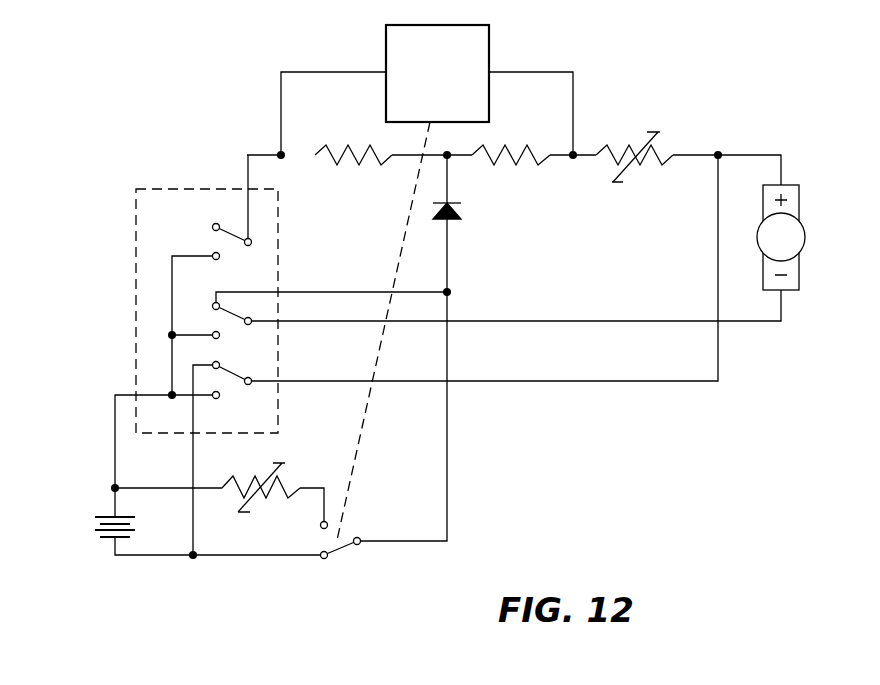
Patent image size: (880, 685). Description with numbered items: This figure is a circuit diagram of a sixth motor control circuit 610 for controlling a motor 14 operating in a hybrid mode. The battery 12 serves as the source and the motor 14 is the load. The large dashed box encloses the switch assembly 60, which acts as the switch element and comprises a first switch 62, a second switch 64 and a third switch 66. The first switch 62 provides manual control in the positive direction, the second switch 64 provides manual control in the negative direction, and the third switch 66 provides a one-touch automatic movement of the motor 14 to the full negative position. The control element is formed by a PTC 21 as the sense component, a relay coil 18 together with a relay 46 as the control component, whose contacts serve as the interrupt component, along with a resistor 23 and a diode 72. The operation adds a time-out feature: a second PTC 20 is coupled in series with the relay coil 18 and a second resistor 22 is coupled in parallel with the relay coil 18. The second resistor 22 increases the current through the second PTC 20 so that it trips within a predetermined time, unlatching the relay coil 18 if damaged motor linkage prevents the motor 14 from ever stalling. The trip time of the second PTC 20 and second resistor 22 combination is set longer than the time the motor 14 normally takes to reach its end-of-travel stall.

The sixth motor control circuit 610 is at (148, 101).
The relay coil 18 is at (452, 110).
The resistor 23 is at (338, 163).
The second resistor 22 is at (523, 163).
The second PTC 20 is at (650, 165).
The diode 72 is at (462, 212).
The motor 14 is at (794, 249).
The switch assembly 60 is at (173, 220).
The third switch 66 is at (233, 236).
The second switch 64 is at (233, 315).
The first switch 62 is at (233, 375).
The battery 12 is at (100, 512).
The PTC 21 is at (277, 496).
The relay 46 is at (343, 548).